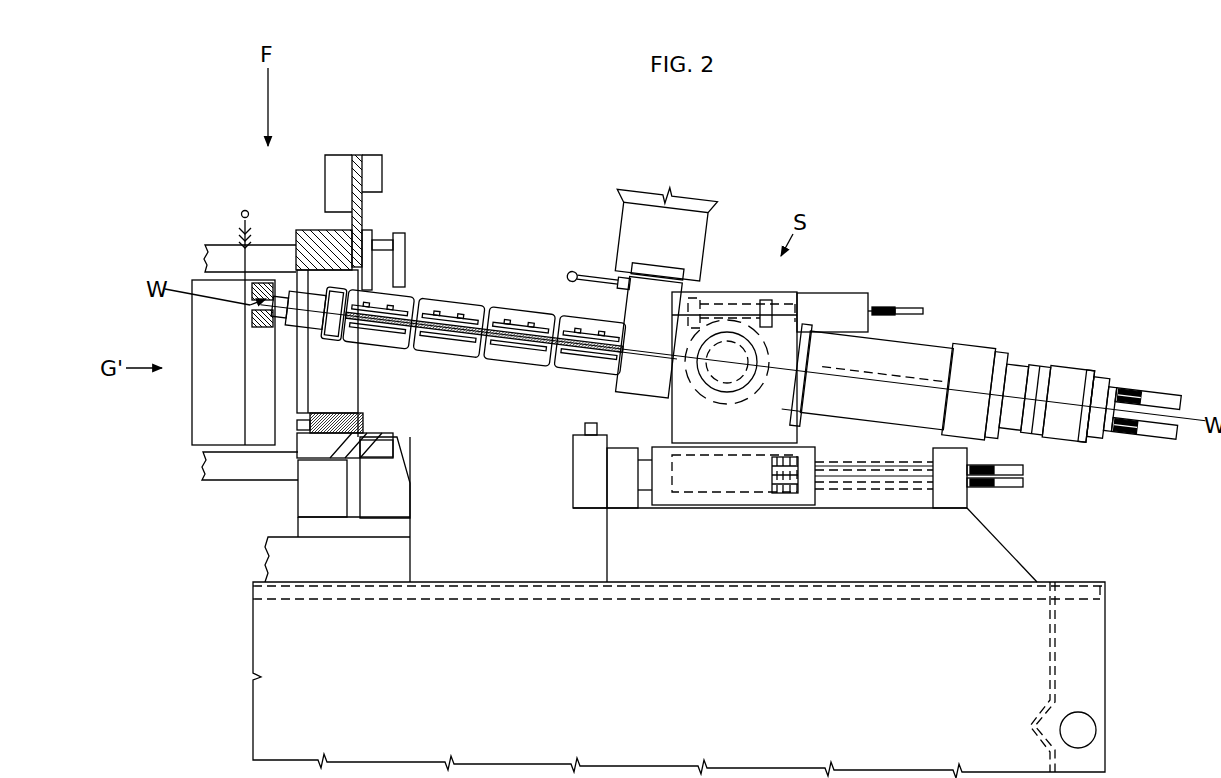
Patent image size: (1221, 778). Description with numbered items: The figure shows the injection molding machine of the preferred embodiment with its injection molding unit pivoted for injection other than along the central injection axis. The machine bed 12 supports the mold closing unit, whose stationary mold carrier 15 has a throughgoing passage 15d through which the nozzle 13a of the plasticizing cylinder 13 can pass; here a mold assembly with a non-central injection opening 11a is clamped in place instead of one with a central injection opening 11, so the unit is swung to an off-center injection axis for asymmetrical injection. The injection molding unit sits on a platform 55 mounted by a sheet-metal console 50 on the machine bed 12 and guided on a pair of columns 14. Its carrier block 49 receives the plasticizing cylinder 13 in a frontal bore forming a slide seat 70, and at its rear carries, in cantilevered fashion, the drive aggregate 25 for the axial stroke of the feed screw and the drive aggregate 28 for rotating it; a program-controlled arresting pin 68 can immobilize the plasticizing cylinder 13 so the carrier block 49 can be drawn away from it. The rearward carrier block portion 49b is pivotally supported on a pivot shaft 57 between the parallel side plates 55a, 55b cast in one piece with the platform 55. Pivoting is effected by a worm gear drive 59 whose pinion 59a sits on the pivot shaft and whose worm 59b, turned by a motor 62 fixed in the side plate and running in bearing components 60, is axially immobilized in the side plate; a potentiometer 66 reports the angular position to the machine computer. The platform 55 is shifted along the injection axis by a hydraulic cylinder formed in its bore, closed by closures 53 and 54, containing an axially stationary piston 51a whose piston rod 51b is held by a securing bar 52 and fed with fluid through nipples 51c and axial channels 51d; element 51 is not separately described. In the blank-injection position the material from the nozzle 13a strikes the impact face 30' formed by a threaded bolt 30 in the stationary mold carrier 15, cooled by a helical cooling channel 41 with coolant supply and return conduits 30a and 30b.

The central injection opening 11 is at (223, 346).
The non-central injection opening 11a is at (252, 291).
The machine bed 12 is at (392, 682).
The plasticizing cylinder 13 is at (510, 302).
The nozzle 13a is at (257, 319).
The columns 14 is at (646, 484).
The stationary mold carrier 15 is at (306, 224).
The throughgoing passage 15d is at (356, 372).
The drive aggregate 25 is at (930, 335).
The drive aggregate 28 is at (1063, 385).
The threaded bolt 30 is at (337, 507).
The impact face 30' is at (380, 415).
The supply conduit 30a is at (297, 470).
The return conduit 30b is at (345, 442).
The cooling channel 41 is at (260, 409).
The carrier block 49 is at (597, 389).
The rearward carrier block portion 49b is at (800, 403).
The console 50 is at (975, 562).
The feed block 51 is at (596, 492).
The piston 51a is at (802, 458).
The piston rod 51b is at (887, 466).
The nipples 51c is at (1025, 470).
The axial channels 51d is at (860, 483).
The securing bar 52 is at (615, 497).
The closure 53 is at (662, 485).
The closure 54 is at (806, 498).
The platform 55 is at (663, 427).
The side plate 55a is at (738, 500).
The side plate 55b is at (780, 439).
The pivot shaft 57 is at (814, 375).
The worm gear drive 59 is at (770, 299).
The pinion 59a is at (820, 382).
The worm 59b is at (736, 304).
The bearing components 60 is at (703, 283).
The motor 62 is at (860, 300).
The potentiometer 66 is at (702, 355).
The arresting pin 68 is at (585, 430).
The slide seat 70 is at (640, 377).